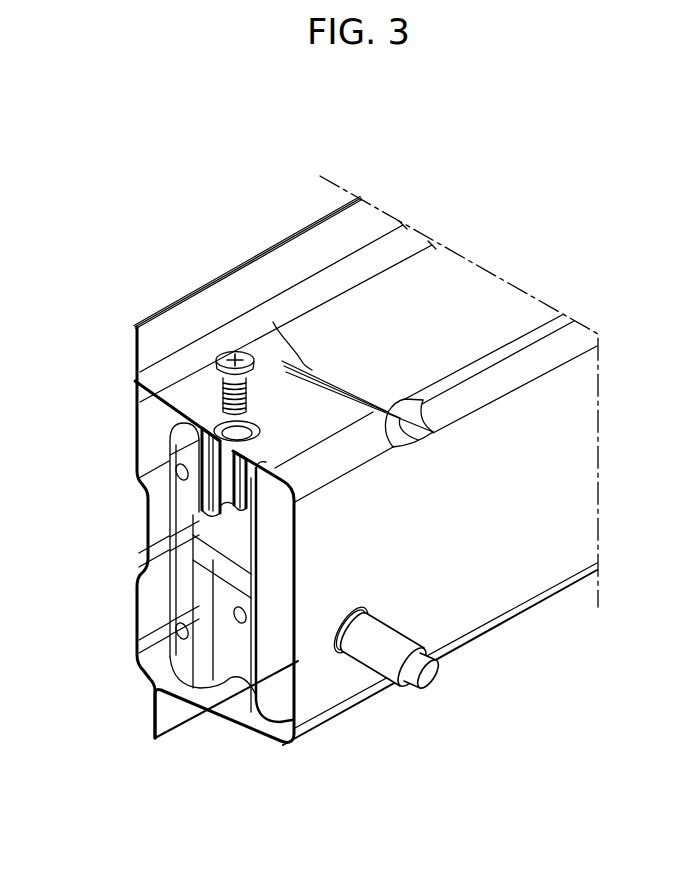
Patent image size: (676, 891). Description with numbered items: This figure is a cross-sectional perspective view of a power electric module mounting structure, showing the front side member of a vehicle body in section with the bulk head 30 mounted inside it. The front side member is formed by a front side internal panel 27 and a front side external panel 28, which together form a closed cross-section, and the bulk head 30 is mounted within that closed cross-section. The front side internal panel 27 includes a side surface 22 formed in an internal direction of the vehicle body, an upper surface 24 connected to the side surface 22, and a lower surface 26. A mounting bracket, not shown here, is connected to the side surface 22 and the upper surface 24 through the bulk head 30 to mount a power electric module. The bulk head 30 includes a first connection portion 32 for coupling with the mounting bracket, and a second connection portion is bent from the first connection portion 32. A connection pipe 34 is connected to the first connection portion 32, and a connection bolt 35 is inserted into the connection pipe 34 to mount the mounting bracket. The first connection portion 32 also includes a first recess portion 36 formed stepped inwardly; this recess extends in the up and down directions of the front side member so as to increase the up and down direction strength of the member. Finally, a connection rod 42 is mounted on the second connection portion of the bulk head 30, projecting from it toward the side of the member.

The side surface 22 is at (338, 525).
The upper surface 24 is at (137, 400).
The lower surface 26 is at (148, 633).
The front side internal panel 27 is at (51, 597).
The front side external panel 28 is at (137, 635).
The bulk head 30 is at (213, 689).
The first connection portion 32 is at (278, 686).
The connection pipe 34 is at (223, 434).
The connection bolt 35 is at (251, 357).
The first recess portion 36 is at (220, 652).
The connection rod 42 is at (377, 652).